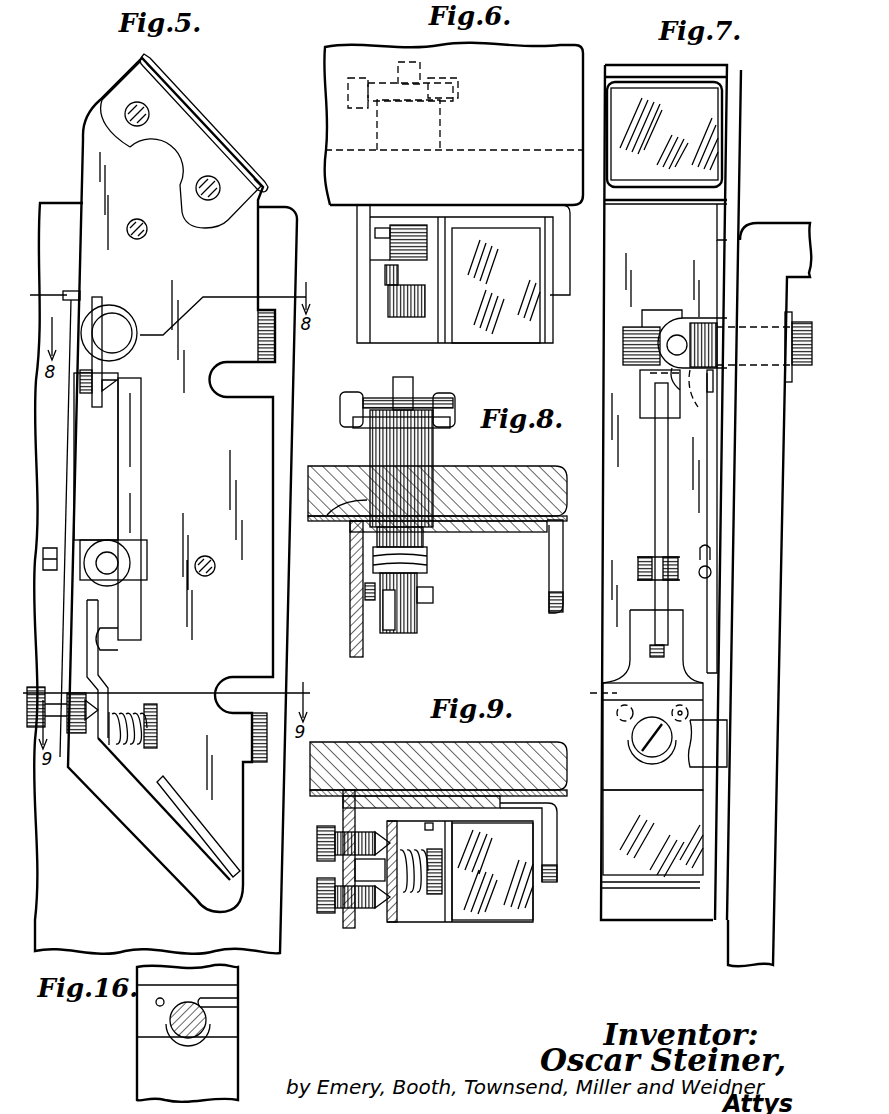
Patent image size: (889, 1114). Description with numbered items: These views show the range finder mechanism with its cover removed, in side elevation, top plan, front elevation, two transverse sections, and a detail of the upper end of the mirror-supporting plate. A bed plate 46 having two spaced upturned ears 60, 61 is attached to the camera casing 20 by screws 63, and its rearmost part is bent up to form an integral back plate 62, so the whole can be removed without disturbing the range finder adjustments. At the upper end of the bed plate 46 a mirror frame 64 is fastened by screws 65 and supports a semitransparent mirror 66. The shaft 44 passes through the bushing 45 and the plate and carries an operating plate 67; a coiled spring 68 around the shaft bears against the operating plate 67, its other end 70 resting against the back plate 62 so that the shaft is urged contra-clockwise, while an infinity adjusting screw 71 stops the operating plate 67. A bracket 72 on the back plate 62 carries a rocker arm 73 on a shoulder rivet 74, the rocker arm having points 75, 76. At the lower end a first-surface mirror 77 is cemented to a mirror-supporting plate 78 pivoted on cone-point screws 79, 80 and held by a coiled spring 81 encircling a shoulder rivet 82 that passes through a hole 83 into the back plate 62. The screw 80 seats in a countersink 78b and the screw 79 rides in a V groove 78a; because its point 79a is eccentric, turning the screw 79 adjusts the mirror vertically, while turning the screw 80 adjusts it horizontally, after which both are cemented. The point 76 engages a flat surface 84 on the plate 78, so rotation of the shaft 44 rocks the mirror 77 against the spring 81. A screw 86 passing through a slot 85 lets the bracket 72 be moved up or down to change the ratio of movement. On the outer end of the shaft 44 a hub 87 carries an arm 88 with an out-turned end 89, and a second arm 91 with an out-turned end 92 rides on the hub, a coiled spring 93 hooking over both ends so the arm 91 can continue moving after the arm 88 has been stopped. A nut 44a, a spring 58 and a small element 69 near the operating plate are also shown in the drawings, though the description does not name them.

In FIG. 5, the camera box or casing 20 is at (278, 574).
In FIG. 6, the camera box or casing 20 is at (560, 50).
In FIG. 8, the camera box or casing 20 is at (498, 470).
In FIG. 9, the camera box or casing 20 is at (515, 752).
In FIG. 7, the camera box or casing 20 is at (778, 235).
In FIG. 5, the shaft 44 is at (116, 322).
In FIG. 6, the shaft 44 is at (392, 78).
In FIG. 8, the shaft 44 is at (413, 387).
In FIG. 7, the shaft 44 is at (631, 327).
In FIG. 8, the nut 44a is at (423, 540).
In FIG. 8, the bushing 45 is at (343, 578).
In FIG. 7, the bushing 45 is at (791, 382).
In FIG. 5, the bed plate 46 is at (250, 606).
In FIG. 6, the bed plate 46 is at (518, 212).
In FIG. 8, the bed plate 46 is at (520, 532).
In FIG. 9, the bed plate 46 is at (414, 793).
In FIG. 7, the bed plate 46 is at (735, 181).
In FIG. 8, the spring 58 is at (427, 566).
In FIG. 5, the upturned ear 60 is at (258, 332).
In FIG. 6, the upturned ear 60 is at (567, 262).
In FIG. 8, the upturned ear 60 is at (549, 585).
In FIG. 7, the upturned ear 60 is at (687, 320).
In FIG. 5, the upturned ear 61 is at (252, 747).
In FIG. 9, the upturned ear 61 is at (551, 883).
In FIG. 7, the upturned ear 61 is at (727, 750).
In FIG. 6, the back plate 62 is at (366, 252).
In FIG. 9, the back plate 62 is at (346, 929).
In FIG. 5, the screws 63 is at (138, 219).
In FIG. 5, the mirror frame 64 is at (187, 163).
In FIG. 6, the mirror frame 64 is at (553, 323).
In FIG. 7, the mirror frame 64 is at (706, 70).
In FIG. 5, the screws 65 is at (130, 123).
In FIG. 5, the semitransparent mirror 66 is at (207, 133).
In FIG. 6, the semitransparent mirror 66 is at (530, 338).
In FIG. 7, the semitransparent mirror 66 is at (710, 114).
In FIG. 5, the operating plate 67 is at (97, 413).
In FIG. 6, the operating plate 67 is at (392, 291).
In FIG. 8, the operating plate 67 is at (405, 615).
In FIG. 7, the operating plate 67 is at (658, 312).
In FIG. 5, the coiled spring 68 is at (137, 343).
In FIG. 6, the coiled spring 68 is at (405, 225).
In FIG. 7, the coiled spring 68 is at (703, 394).
In FIG. 5, the spring clip 69 is at (105, 371).
In FIG. 6, the spring clip 69 is at (385, 271).
In FIG. 7, the spring clip 69 is at (691, 403).
In FIG. 5, the end of coiled spring 70 is at (80, 295).
In FIG. 6, the end of coiled spring 70 is at (375, 232).
In FIG. 7, the end of coiled spring 70 is at (713, 388).
In FIG. 5, the infinity adjusting screw 71 is at (95, 456).
In FIG. 8, the infinity adjusting screw 71 is at (367, 600).
In FIG. 7, the bearing member or bracket 72 is at (717, 614).
In FIG. 5, the rocker arm or lever 73 is at (141, 473).
In FIG. 8, the rocker arm or lever 73 is at (433, 597).
In FIG. 7, the rocker arm or lever 73 is at (668, 484).
In FIG. 5, the shoulder rivet 74 is at (118, 563).
In FIG. 7, the shoulder rivet 74 is at (640, 557).
In FIG. 5, the point 75 is at (118, 385).
In FIG. 5, the point 76 is at (130, 637).
In FIG. 5, the first-surface mirror 77 is at (215, 849).
In FIG. 9, the first-surface mirror 77 is at (492, 915).
In FIG. 7, the first-surface mirror 77 is at (668, 870).
In FIG. 5, the mirror-supporting plate 78 is at (147, 777).
In FIG. 9, the mirror-supporting plate 78 is at (387, 926).
In FIG. 7, the mirror-supporting plate 78 is at (603, 797).
In FIG. 16, the mirror-supporting plate 78 is at (137, 1056).
In FIG. 7, the groove 78a is at (591, 688).
In FIG. 16, the groove 78a is at (218, 1006).
In FIG. 9, the countersink 78b is at (428, 830).
In FIG. 16, the countersink 78b is at (156, 1003).
In FIG. 5, the cone-pointed screw 79 is at (36, 687).
In FIG. 9, the cone-pointed screw 79 is at (325, 913).
In FIG. 7, the cone-pointed screw 79 is at (628, 705).
In FIG. 5, the point of cone-pointed screw 79a is at (108, 690).
In FIG. 9, the point of cone-pointed screw 79a is at (384, 902).
In FIG. 9, the cone-pointed screw 80 is at (322, 827).
In FIG. 7, the cone-pointed screw 80 is at (679, 705).
In FIG. 5, the coiled spring 81 is at (130, 745).
In FIG. 9, the coiled spring 81 is at (414, 893).
In FIG. 5, the shoulder rivet or screw 82 is at (157, 724).
In FIG. 9, the shoulder rivet or screw 82 is at (436, 895).
In FIG. 7, the shoulder rivet or screw 82 is at (660, 752).
In FIG. 16, the shoulder rivet or screw 82 is at (180, 1030).
In FIG. 7, the hole 83 is at (645, 756).
In FIG. 16, the hole 83 is at (202, 1040).
In FIG. 5, the flat surface 84 is at (98, 661).
In FIG. 7, the flat surface 84 is at (633, 638).
In FIG. 7, the slot 85 is at (710, 553).
In FIG. 5, the screw 86 is at (50, 545).
In FIG. 7, the screw 86 is at (711, 572).
In FIG. 6, the hub 87 is at (440, 128).
In FIG. 8, the hub 87 is at (375, 451).
In FIG. 8, the radially extending arm 88 is at (447, 424).
In FIG. 8, the out-turned end 89 is at (453, 403).
In FIG. 8, the second arm 91 is at (360, 424).
In FIG. 8, the out-turned end 92 is at (340, 409).
In FIG. 6, the coiled spring 93 is at (436, 80).